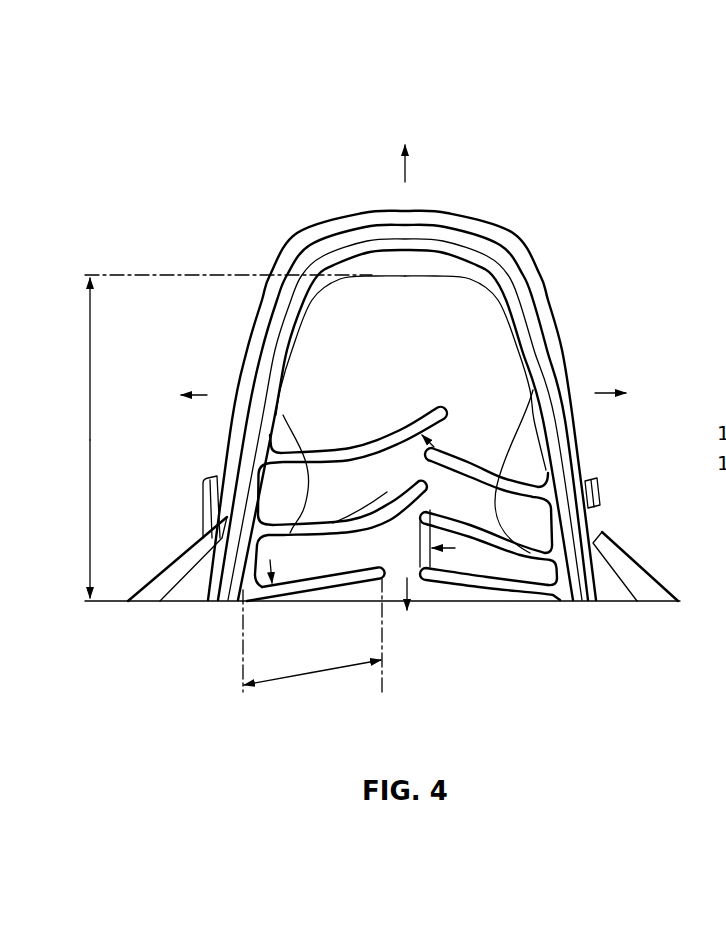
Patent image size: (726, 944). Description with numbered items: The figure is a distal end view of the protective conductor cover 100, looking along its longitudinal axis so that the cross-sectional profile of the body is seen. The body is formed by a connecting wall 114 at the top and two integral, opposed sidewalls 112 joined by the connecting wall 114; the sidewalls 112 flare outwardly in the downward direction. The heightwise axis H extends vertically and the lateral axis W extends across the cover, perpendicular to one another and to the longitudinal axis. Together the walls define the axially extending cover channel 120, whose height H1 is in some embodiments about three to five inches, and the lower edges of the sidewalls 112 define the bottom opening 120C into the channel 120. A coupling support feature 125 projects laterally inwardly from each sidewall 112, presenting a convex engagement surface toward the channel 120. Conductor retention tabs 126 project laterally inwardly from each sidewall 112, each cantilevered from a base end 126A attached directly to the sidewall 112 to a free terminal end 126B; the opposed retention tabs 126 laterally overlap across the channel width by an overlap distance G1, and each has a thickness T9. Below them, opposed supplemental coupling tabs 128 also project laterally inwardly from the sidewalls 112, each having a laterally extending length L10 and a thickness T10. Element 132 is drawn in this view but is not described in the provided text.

The conductor cover 100 is at (191, 131).
The sidewalls 112 is at (273, 388).
The connecting wall 114 is at (430, 245).
The outer wall 132 is at (490, 243).
The cover channel 120 is at (425, 309).
The bottom opening 120C is at (516, 604).
The coupling support feature 125 is at (275, 492).
The retention tab 126 is at (406, 469).
The base end 126A is at (285, 458).
The free terminal end 126B is at (488, 468).
The supplemental coupling tab 128 is at (323, 581).
The height of the channel H1 is at (228, 436).
The thickness of retention tab T9 is at (411, 421).
The overlap distance G1 is at (418, 547).
The thickness of supplemental coupling tab T10 is at (279, 600).
The laterally extending length of supplemental coupling tab L10 is at (320, 685).
The heightwise axis H is at (399, 362).
The lateral axis W is at (403, 395).